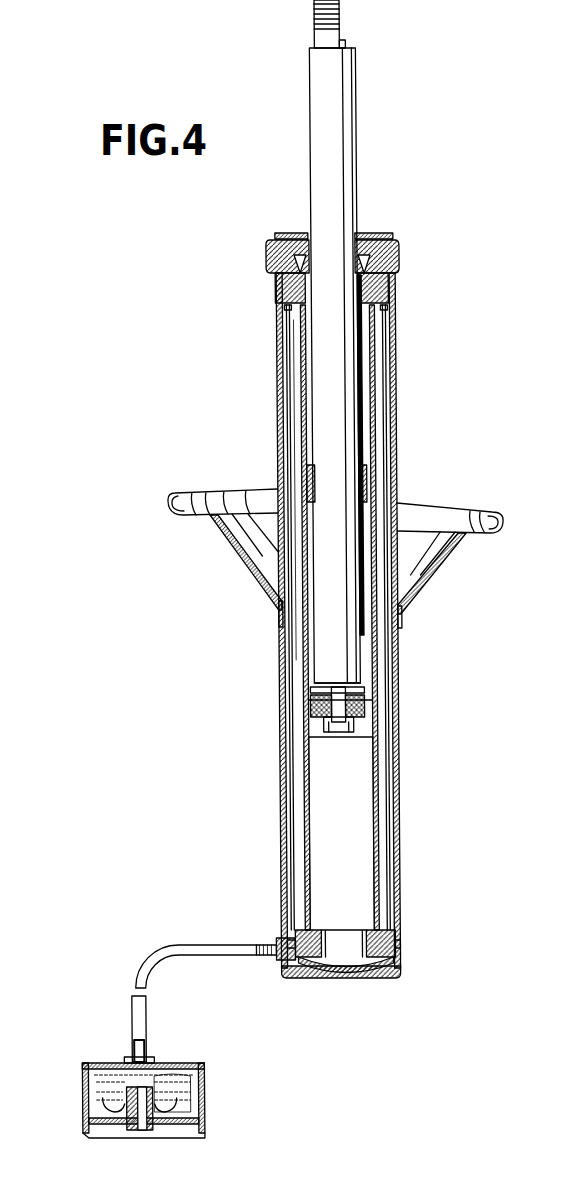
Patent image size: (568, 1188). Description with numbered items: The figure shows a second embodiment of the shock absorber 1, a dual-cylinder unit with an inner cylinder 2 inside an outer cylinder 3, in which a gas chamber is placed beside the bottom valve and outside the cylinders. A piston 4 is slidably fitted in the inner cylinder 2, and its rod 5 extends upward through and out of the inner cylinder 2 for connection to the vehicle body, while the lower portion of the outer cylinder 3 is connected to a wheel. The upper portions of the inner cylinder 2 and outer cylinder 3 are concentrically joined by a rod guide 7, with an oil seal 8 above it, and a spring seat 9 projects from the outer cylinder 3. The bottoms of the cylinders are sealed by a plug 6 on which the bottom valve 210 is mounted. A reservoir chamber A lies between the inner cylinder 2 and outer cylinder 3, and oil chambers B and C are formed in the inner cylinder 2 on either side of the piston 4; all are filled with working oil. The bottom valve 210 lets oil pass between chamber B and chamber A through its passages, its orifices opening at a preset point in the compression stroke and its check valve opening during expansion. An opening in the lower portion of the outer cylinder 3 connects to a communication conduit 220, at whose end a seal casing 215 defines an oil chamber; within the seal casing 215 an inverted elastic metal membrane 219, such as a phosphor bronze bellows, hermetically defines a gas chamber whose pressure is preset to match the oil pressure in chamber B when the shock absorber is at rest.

The shock absorber 1 is at (403, 643).
The inner cylinder 2 is at (302, 788).
The outer cylinder 3 is at (279, 721).
The piston 4 is at (302, 702).
The rod 5 is at (342, 369).
The plug 6 is at (330, 972).
The rod guide 7 is at (280, 298).
The oil seal 8 is at (277, 256).
The spring seat 9 is at (187, 517).
The reservoir chamber A is at (286, 620).
The oil chamber B is at (342, 787).
The oil chamber C is at (369, 510).
The bottom valve 210 is at (316, 926).
The seal casing 215 is at (80, 1108).
The inverted elastic metal membrane 219 is at (200, 1098).
The communication conduit 220 is at (141, 953).